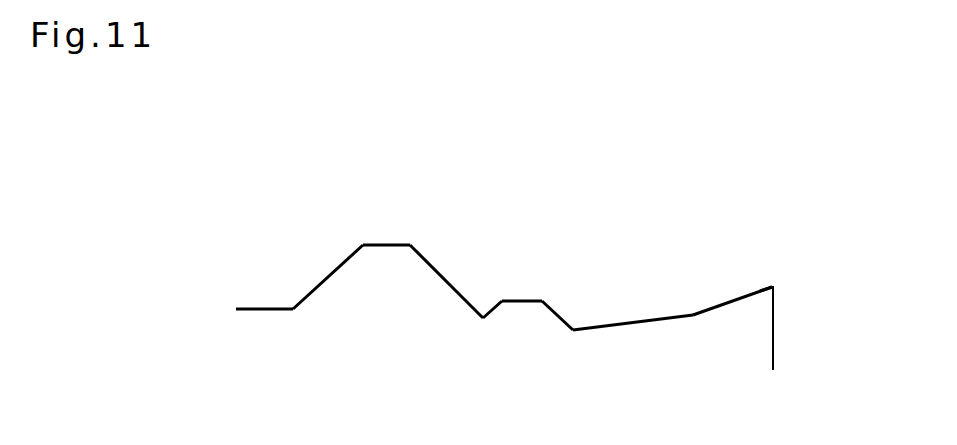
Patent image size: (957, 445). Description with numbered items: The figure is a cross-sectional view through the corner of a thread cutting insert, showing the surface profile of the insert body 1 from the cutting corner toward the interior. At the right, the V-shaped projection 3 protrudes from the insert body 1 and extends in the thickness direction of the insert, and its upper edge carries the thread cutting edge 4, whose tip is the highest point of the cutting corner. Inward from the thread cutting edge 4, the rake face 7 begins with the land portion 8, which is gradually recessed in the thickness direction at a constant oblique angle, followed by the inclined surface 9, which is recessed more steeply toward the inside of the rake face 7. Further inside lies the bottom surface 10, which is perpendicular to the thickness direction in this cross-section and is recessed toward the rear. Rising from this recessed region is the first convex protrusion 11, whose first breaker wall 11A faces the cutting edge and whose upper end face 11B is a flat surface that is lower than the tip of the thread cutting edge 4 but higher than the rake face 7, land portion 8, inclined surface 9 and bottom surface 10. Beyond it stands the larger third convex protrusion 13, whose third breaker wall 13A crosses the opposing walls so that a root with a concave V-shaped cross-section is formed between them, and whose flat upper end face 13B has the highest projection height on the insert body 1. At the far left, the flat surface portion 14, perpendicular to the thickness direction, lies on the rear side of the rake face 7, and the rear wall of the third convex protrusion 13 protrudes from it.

The insert body 1 is at (571, 239).
The V-shaped projection 3 is at (841, 317).
The thread cutting edge 4 is at (777, 281).
The rake face 7 is at (668, 185).
The land portion 8 is at (763, 285).
The inclined surface 9 is at (723, 300).
The bottom surface 10 is at (637, 320).
The first convex protrusion 11 is at (477, 198).
The first breaker wall 11A is at (560, 314).
The upper end face of first convex protrusion 11B is at (523, 301).
The third convex protrusion 13 is at (332, 143).
The third breaker wall 13A is at (430, 265).
The upper end face of third convex protrusion 13B is at (383, 245).
The flat surface portion 14 is at (262, 308).